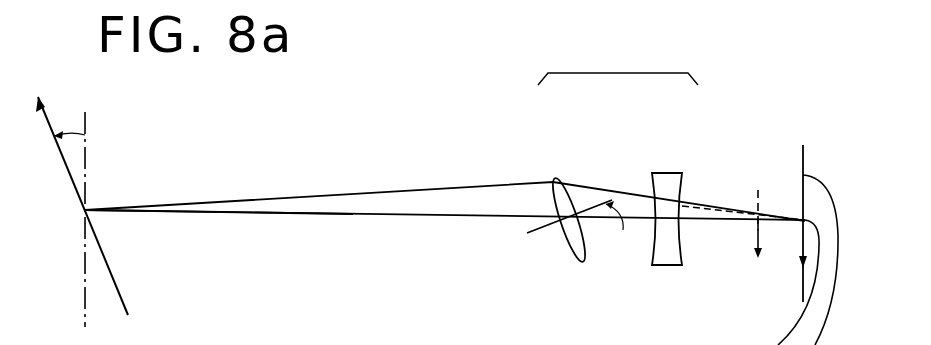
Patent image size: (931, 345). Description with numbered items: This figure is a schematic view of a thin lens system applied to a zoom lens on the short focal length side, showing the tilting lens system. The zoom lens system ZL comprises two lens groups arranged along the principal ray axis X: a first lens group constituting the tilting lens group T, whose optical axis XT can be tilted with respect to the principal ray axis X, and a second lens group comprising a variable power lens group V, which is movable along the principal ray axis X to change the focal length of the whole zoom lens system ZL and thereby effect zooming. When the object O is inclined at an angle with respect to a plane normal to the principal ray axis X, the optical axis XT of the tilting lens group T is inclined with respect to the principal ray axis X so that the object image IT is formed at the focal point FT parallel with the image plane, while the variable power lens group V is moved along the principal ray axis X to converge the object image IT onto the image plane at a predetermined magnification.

The object O is at (107, 260).
The principal ray axis X is at (353, 217).
The tilting lens group T is at (567, 243).
The optical axis of tilting lens group XT is at (578, 222).
The variable power lens group V is at (668, 262).
The zoom lens system ZL is at (618, 59).
The object image IT is at (756, 200).
The focal point FT is at (759, 226).